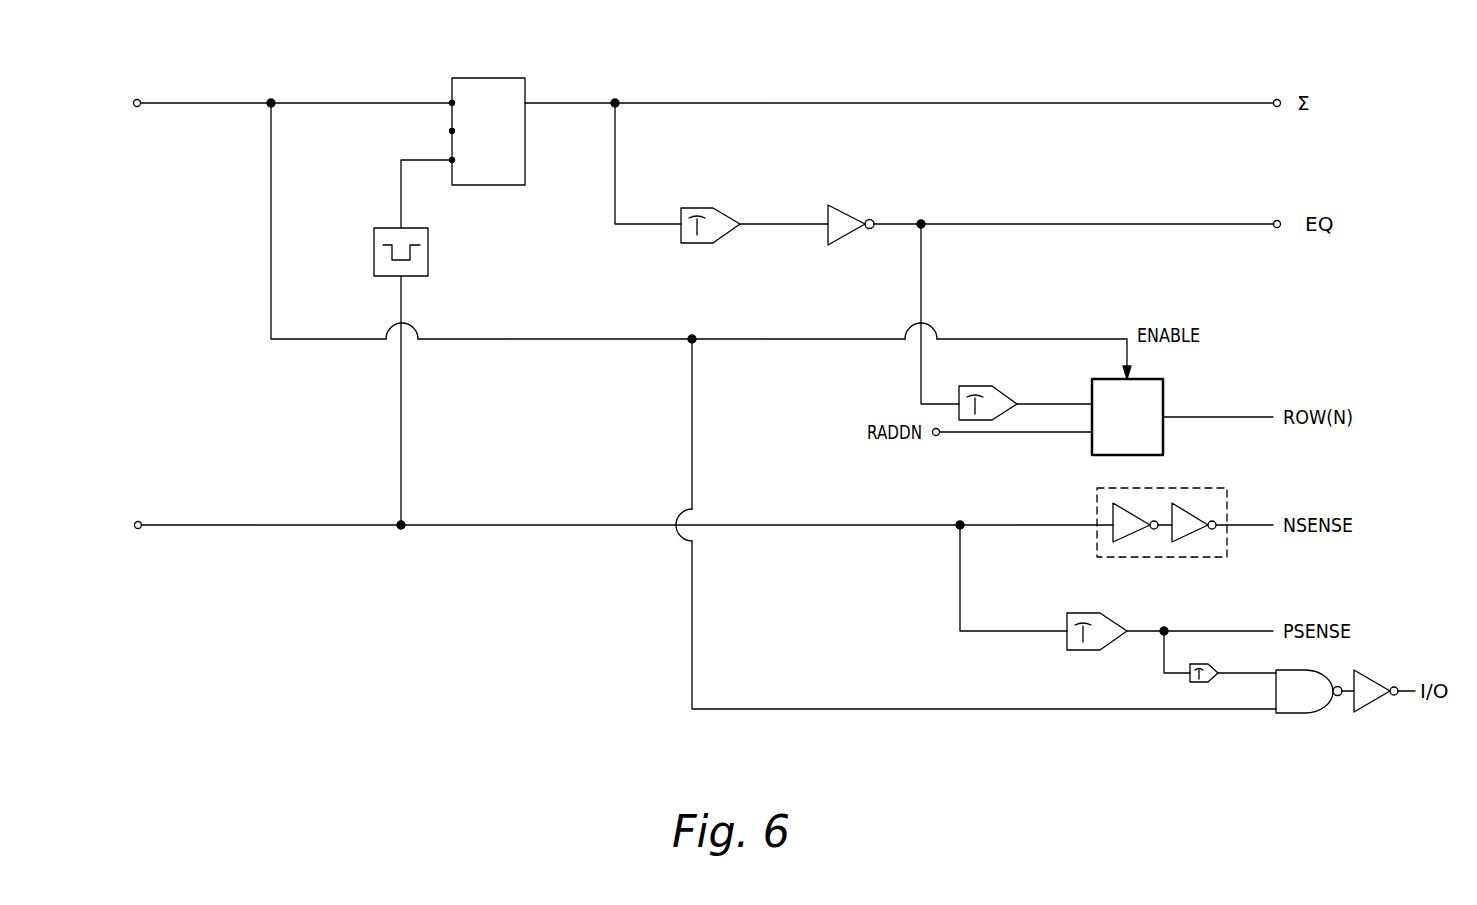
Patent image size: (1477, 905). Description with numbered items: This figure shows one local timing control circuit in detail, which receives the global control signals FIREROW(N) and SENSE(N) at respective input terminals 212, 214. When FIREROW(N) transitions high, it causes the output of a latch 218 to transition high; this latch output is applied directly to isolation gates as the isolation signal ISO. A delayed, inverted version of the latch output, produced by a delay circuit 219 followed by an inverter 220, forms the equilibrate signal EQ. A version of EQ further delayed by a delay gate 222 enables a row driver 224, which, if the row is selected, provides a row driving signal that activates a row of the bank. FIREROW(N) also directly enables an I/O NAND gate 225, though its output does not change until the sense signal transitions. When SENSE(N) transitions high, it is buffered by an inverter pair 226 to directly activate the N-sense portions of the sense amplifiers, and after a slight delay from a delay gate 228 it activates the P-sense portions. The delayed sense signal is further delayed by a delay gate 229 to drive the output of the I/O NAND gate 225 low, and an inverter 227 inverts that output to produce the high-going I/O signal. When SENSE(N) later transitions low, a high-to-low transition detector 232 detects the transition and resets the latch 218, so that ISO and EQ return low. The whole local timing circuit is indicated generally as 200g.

The FIREROW(N) input terminal 212 is at (137, 107).
The SENSE(N) input terminal 214 is at (138, 529).
The latch 218 is at (485, 76).
The buffer 219 is at (697, 208).
The inverter 220 is at (845, 212).
The buffer 222 is at (975, 386).
The row driver 224 is at (1092, 446).
The NAND gate 225 is at (1297, 713).
The double inverter buffer 226 is at (1197, 488).
The inverter 227 is at (1375, 703).
The buffer 228 is at (1082, 650).
The buffer 229 is at (1202, 663).
The pulse generator 232 is at (428, 253).
The row circuit 200g is at (424, 574).